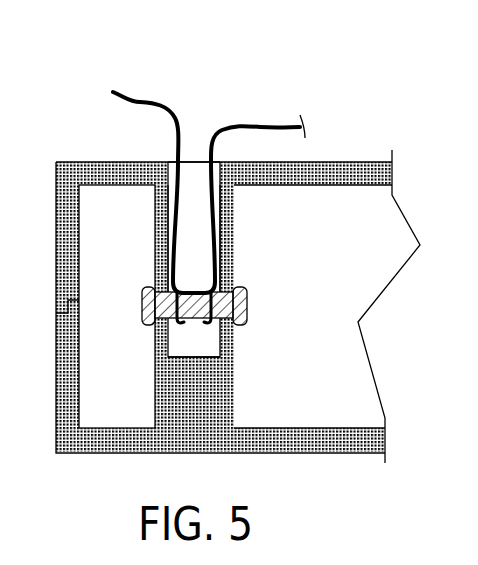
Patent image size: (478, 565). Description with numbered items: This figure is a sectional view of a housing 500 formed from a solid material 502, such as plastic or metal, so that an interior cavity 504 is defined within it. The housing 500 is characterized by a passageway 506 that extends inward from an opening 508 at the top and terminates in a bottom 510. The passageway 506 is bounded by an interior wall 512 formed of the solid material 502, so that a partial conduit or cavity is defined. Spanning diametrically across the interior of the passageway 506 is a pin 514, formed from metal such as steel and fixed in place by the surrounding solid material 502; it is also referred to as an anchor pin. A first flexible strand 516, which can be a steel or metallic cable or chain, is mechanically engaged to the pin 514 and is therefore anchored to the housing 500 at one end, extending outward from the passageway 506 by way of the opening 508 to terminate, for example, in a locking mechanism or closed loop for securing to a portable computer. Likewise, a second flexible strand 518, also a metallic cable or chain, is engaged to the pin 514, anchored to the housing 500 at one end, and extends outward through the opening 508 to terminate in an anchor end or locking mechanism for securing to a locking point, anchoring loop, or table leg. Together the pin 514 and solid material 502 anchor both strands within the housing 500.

The housing 500 is at (320, 36).
The solid material 502 is at (352, 161).
The interior cavity 504 is at (346, 240).
The passageway 506 is at (195, 186).
The opening 508 is at (170, 161).
The bottom 510 is at (208, 356).
The interior wall 512 is at (172, 338).
The pin 514 is at (248, 298).
The first flexible strand 516 is at (138, 95).
The second flexible strand 518 is at (276, 124).